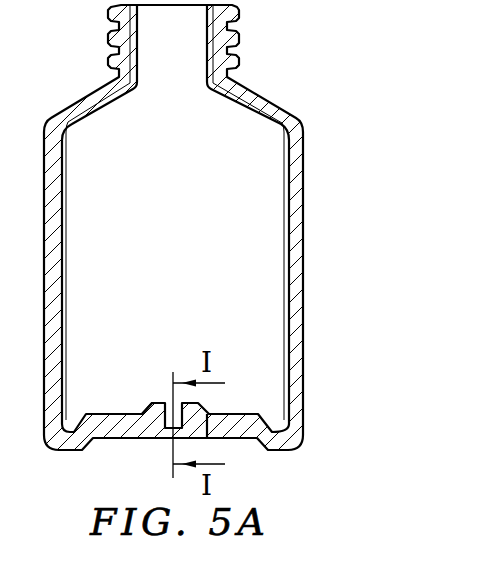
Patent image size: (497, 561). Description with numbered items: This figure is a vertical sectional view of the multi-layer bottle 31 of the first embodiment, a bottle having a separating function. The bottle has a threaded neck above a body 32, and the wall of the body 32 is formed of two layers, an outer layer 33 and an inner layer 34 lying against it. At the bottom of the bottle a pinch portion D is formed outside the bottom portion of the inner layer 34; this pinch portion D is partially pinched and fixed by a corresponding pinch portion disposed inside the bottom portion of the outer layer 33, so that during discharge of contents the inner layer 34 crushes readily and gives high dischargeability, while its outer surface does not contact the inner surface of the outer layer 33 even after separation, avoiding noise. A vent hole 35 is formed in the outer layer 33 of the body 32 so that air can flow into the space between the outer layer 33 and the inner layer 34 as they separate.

The multi-layer bottle 31 is at (268, 62).
The body 32 is at (315, 343).
The outer layer 33 is at (297, 271).
The inner layer 34 is at (286, 200).
The vent hole 35 is at (217, 433).
The pinch portion D is at (152, 424).